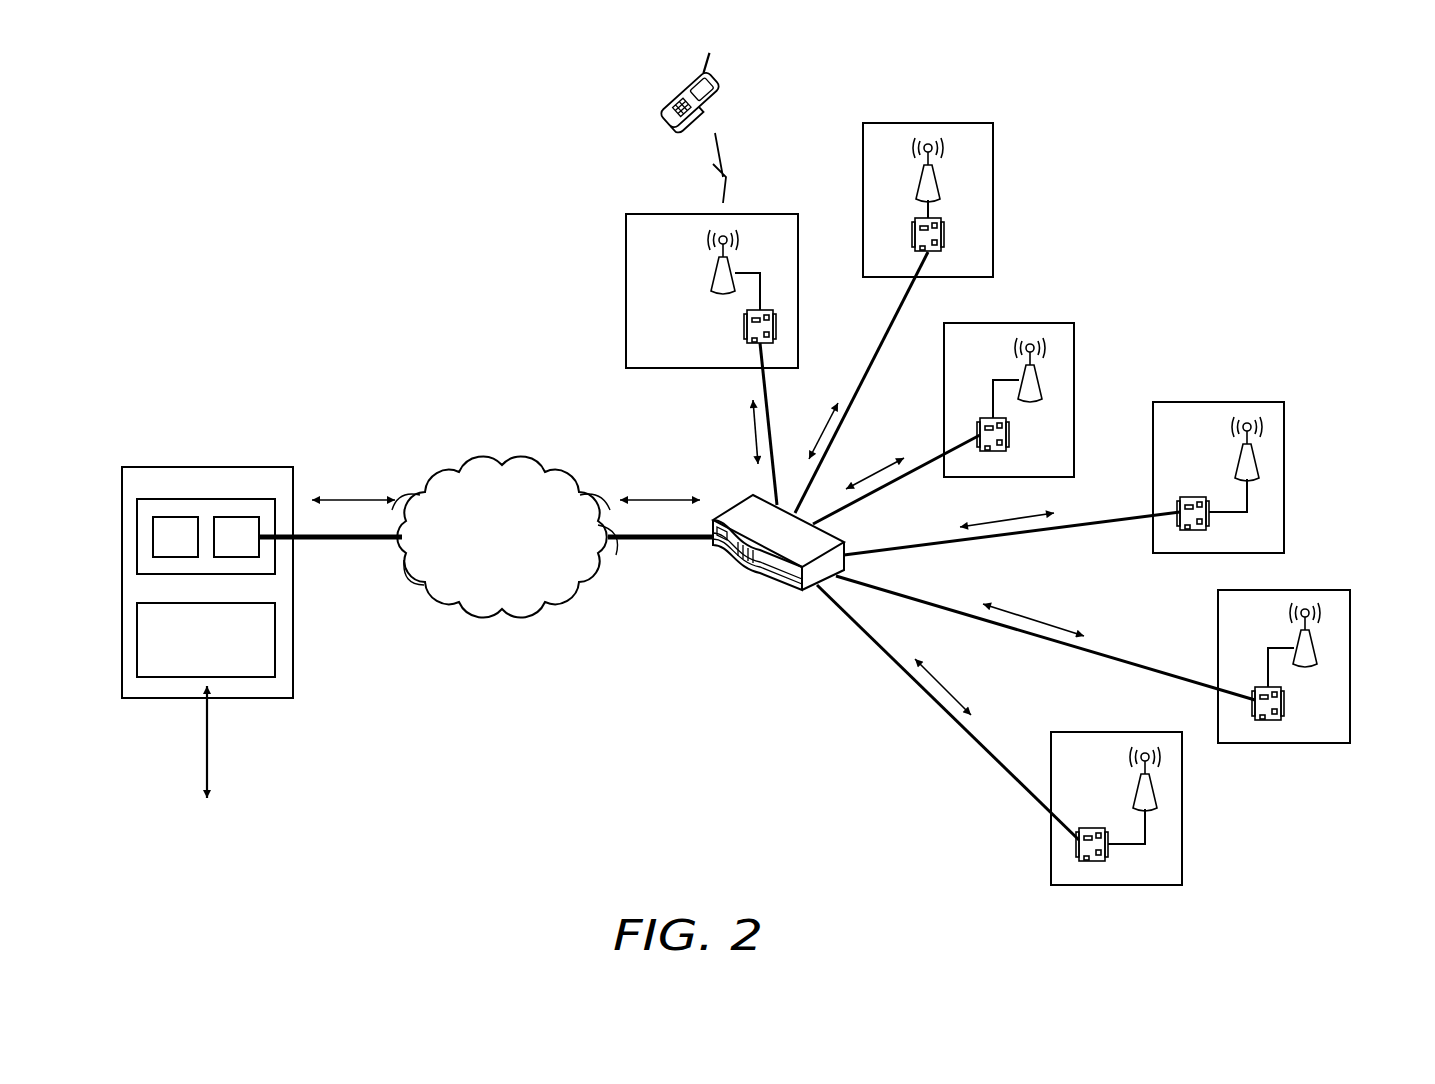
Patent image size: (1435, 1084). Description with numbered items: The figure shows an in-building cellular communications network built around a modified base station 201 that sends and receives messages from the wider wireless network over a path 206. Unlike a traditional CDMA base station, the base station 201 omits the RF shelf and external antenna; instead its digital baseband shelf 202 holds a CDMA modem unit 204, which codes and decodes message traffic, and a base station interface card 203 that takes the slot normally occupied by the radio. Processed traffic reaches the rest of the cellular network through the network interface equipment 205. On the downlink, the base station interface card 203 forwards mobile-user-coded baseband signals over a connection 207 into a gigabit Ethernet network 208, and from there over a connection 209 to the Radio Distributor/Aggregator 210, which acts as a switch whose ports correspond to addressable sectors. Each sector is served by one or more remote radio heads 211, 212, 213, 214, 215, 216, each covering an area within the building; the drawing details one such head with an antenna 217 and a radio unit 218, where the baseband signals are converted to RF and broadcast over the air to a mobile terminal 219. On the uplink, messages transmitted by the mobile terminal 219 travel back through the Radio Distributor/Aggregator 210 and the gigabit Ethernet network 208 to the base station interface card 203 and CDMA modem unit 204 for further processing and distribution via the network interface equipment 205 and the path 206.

The base station 201 is at (182, 467).
The digital baseband shelf 202 is at (213, 499).
The base station interface card 203 is at (254, 549).
The CDMA modem unit 204 is at (193, 549).
The network interface equipment 205 is at (223, 655).
The path 206 is at (208, 768).
The communication link to network 207 is at (345, 543).
The gigabit Ethernet network 208 is at (517, 553).
The communication link to router 209 is at (665, 547).
The Radio Distributor/Aggregator 210 is at (786, 598).
The remote radio head 211 is at (672, 291).
The remote radio head 212 is at (922, 123).
The remote radio head 213 is at (1028, 323).
The remote radio head 214 is at (1222, 402).
The remote radio head 215 is at (1350, 663).
The remote radio head 216 is at (1182, 820).
The antenna 217 is at (712, 268).
The transceiver module 218 is at (744, 323).
The mobile terminal 219 is at (677, 104).